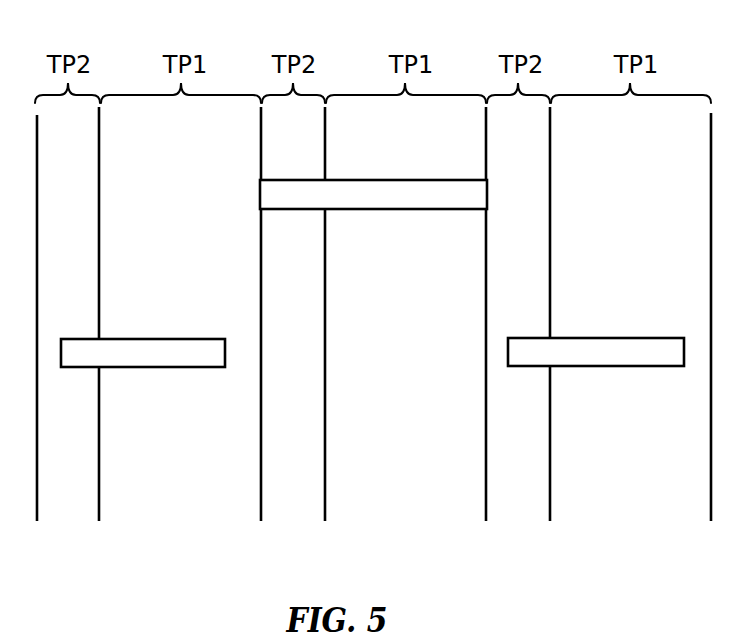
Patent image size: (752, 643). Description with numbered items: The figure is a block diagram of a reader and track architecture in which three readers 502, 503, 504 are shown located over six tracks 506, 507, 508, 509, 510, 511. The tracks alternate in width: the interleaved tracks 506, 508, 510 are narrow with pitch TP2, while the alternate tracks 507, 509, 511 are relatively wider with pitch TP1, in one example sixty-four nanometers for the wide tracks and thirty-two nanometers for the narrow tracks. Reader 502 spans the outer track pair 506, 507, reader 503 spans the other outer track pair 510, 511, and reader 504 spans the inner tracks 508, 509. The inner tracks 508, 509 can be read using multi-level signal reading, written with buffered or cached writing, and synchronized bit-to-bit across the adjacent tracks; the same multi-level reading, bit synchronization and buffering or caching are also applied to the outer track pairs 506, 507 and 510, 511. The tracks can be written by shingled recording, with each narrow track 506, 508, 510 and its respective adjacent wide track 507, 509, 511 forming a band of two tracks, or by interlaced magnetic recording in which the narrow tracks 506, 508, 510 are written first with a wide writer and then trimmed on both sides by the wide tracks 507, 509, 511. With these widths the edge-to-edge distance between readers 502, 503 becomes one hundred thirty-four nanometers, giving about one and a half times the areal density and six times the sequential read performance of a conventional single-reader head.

The reader 502 is at (168, 337).
The reader 503 is at (581, 335).
The reader 504 is at (385, 212).
The track 506 is at (79, 527).
The track 507 is at (176, 527).
The track 508 is at (293, 527).
The track 509 is at (404, 527).
The track 510 is at (522, 527).
The track 511 is at (624, 527).